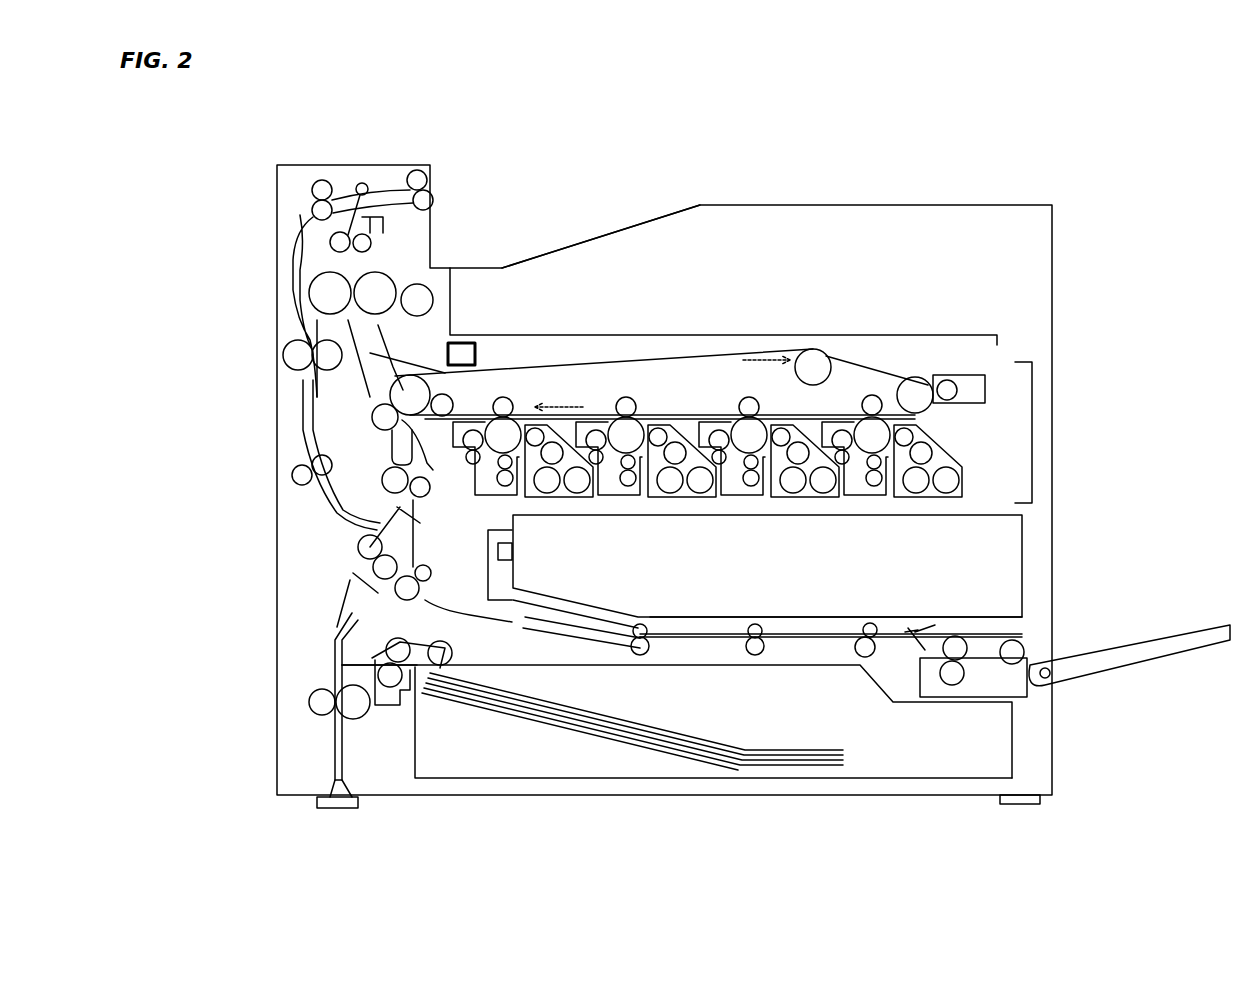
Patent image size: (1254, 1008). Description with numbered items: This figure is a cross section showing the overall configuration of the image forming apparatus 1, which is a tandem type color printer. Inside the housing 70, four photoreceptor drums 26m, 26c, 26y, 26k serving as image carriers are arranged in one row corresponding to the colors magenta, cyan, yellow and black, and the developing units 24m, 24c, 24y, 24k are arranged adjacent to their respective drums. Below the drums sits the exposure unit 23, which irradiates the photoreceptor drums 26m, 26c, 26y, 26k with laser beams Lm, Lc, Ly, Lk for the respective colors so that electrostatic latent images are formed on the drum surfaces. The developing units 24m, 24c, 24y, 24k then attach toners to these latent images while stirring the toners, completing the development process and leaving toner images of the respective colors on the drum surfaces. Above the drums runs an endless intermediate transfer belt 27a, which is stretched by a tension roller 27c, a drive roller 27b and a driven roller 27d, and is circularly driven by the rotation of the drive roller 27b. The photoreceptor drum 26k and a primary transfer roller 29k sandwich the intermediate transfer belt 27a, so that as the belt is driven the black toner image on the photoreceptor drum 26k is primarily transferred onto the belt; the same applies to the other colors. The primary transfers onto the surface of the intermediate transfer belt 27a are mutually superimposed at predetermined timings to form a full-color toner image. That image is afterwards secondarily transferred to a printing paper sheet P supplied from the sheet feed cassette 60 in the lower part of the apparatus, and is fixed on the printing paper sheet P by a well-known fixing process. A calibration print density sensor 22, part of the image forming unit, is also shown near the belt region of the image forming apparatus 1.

The image forming apparatus 1 is at (1005, 185).
The housing 70 is at (590, 240).
The calibration print density sensor 22 is at (462, 343).
The driven roller 27d is at (445, 378).
The tension roller 27c is at (815, 349).
The intermediate transfer belt 27a is at (905, 378).
The drive roller 27b is at (940, 385).
The photoreceptor drum 26m is at (493, 420).
The developing unit 24m is at (560, 420).
The photoreceptor drum 26c is at (608, 415).
The developing unit 24c is at (690, 420).
The photoreceptor drum 26y is at (735, 417).
The developing unit 24y is at (780, 422).
The photoreceptor drum 26k is at (865, 417).
The developing unit 24k is at (950, 452).
The primary transfer roller 29k is at (872, 396).
The exposure unit 23 is at (1022, 538).
The laser beam Lm is at (532, 500).
The laser beam Lc is at (655, 500).
The laser beam Ly is at (778, 500).
The laser beam Lk is at (905, 500).
The printing paper sheet P is at (623, 740).
The sheet feed cassette 60 is at (848, 778).